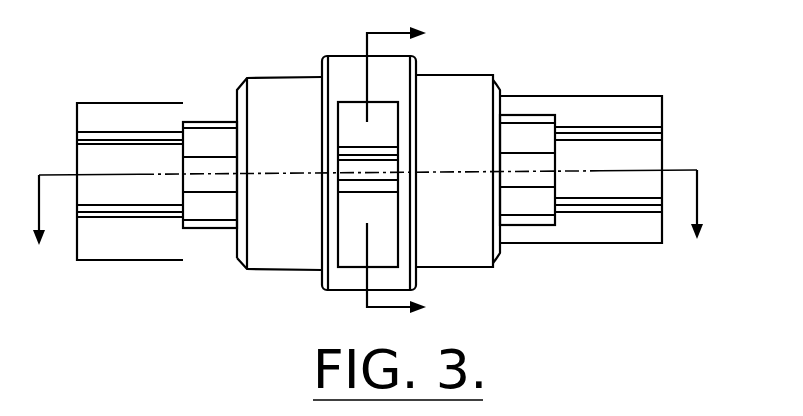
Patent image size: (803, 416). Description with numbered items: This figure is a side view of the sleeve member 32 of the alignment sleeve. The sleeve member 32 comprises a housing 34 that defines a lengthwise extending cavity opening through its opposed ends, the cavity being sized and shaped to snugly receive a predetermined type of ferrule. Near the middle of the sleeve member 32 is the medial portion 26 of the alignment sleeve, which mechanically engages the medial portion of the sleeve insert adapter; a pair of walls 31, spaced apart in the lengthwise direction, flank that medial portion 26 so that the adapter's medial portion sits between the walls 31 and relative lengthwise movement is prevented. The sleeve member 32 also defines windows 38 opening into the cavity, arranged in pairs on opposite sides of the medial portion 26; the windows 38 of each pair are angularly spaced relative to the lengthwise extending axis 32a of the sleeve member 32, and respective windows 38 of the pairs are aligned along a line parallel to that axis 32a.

The medial portion 26 is at (327, 55).
The walls 31 is at (372, 188).
The sleeve member 32 is at (378, 170).
The lengthwise extending axis 32a is at (639, 164).
The housing 34 is at (599, 155).
The window 38 is at (218, 168).